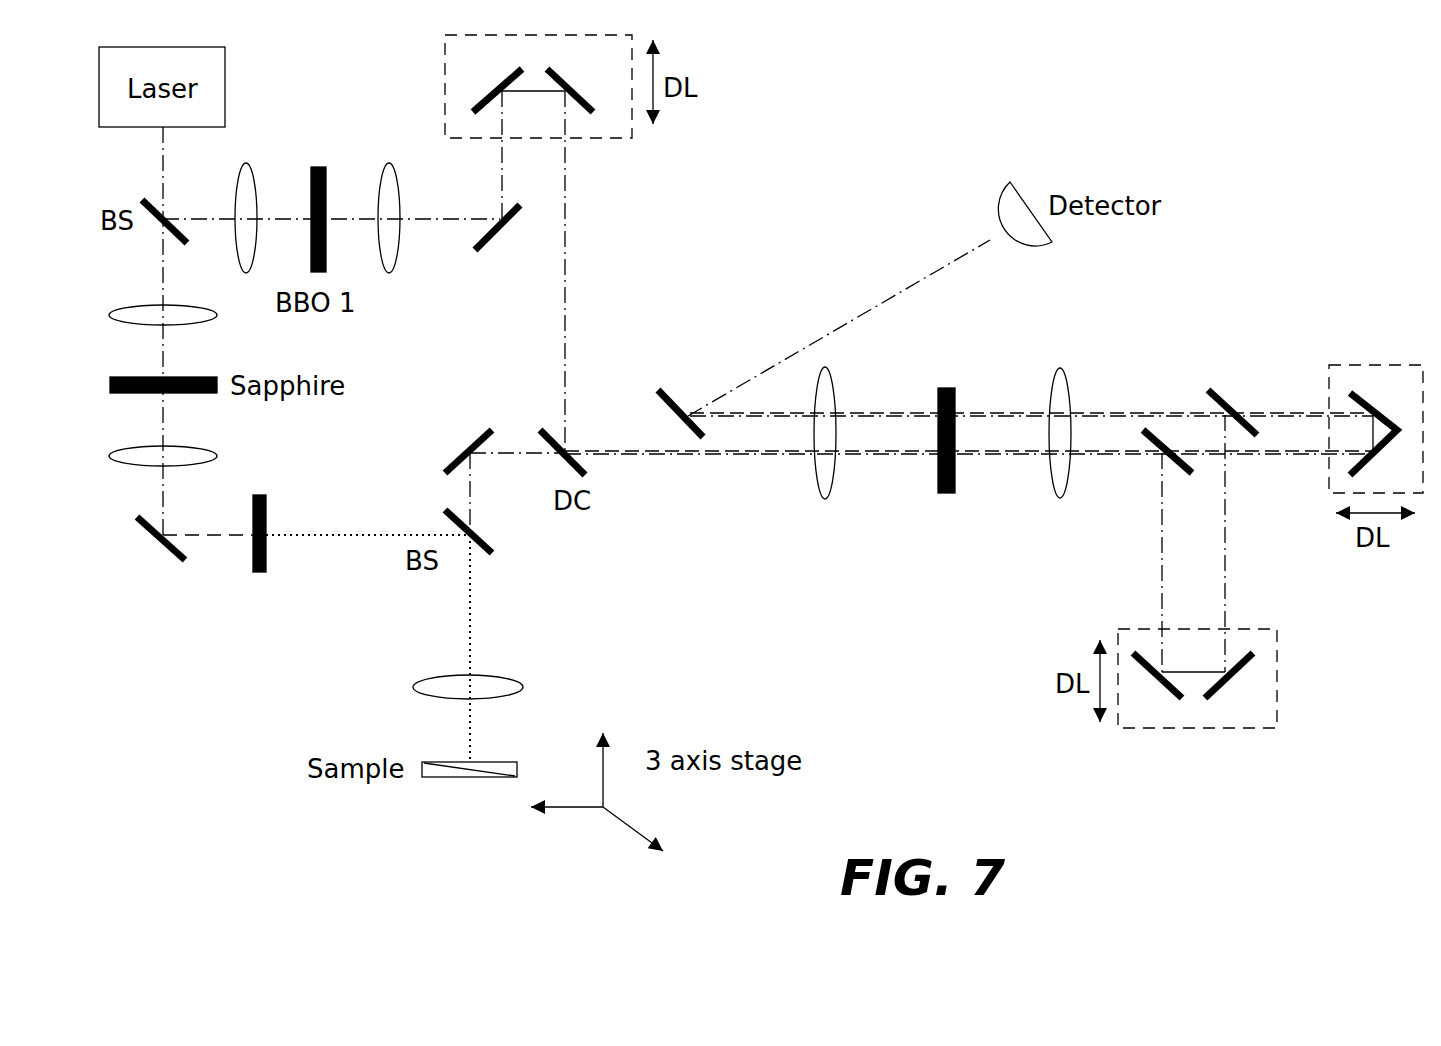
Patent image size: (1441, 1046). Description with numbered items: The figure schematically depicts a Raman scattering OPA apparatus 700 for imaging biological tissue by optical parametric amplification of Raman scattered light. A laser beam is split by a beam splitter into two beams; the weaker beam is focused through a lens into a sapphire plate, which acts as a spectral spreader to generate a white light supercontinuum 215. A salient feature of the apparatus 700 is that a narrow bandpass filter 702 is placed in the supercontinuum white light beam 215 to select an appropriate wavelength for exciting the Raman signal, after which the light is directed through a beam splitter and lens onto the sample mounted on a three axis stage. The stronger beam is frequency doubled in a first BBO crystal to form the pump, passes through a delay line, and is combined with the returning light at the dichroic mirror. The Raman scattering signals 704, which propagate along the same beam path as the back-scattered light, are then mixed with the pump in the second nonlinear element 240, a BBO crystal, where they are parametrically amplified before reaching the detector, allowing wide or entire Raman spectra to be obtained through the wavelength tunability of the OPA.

The white light supercontinuum 215 is at (165, 497).
The second nonlinear element 240 is at (947, 493).
The Raman scattering OPA apparatus 700 is at (255, 685).
The narrow bandpass filter 702 is at (265, 557).
The Raman scattering signals 704 is at (515, 453).